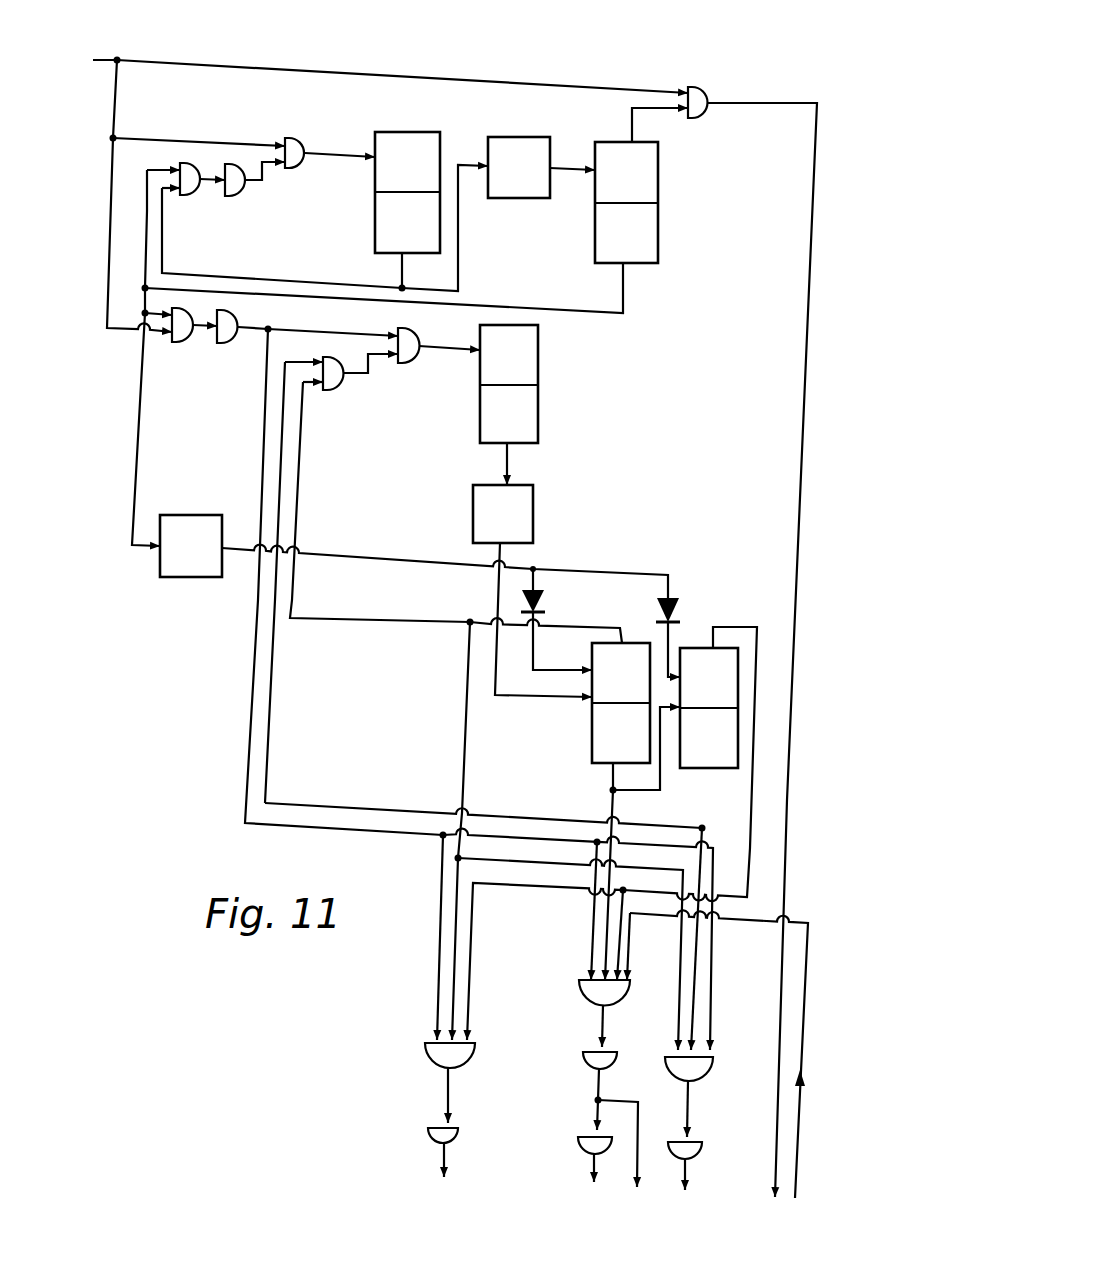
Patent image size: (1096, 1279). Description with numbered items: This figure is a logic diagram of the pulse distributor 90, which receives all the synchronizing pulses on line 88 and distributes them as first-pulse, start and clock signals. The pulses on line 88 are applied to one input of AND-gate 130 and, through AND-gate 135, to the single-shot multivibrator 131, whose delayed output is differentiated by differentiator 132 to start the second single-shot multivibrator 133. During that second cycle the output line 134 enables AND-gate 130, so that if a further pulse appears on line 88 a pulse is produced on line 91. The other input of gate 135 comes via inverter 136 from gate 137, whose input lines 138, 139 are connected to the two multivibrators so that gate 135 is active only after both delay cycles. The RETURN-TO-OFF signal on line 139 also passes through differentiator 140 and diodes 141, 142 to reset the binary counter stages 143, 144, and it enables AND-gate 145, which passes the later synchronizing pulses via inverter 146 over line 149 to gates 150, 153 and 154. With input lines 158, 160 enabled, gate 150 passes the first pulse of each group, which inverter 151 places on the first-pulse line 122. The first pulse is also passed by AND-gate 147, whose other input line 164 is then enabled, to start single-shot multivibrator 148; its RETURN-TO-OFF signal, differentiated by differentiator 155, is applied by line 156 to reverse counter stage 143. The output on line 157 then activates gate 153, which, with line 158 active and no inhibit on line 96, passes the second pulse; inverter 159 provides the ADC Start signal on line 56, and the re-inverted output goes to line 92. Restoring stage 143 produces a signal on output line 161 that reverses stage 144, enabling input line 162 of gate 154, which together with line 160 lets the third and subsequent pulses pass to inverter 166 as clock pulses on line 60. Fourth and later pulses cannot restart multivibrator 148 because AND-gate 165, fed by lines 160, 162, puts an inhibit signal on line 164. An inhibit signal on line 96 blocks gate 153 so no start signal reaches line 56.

The synchronizing pulse line 88 is at (104, 59).
The pulse distributor 90 is at (75, 108).
The AND-gate 130 is at (706, 92).
The single-shot multivibrator 131 is at (408, 131).
The differentiator 132 is at (522, 203).
The second single-shot multivibrator 133 is at (660, 176).
The output line 134 is at (634, 128).
The AND-gate 135 is at (300, 137).
The inverter 136 is at (237, 192).
The gate 137 is at (188, 196).
The input line 138 is at (280, 277).
The input line 139 is at (147, 211).
The differentiator 140 is at (185, 514).
The diode 141 is at (547, 600).
The diode 142 is at (681, 601).
The binary counter stage 143 is at (600, 733).
The binary counter stage 144 is at (723, 741).
The AND-gate 145 is at (177, 343).
The inverter 146 is at (227, 344).
The AND-gate 147 is at (408, 341).
The single-shot multivibrator 148 is at (540, 351).
The line 149 is at (248, 701).
The gate 150 is at (438, 1050).
The inverter 151 is at (452, 1138).
The gate 153 is at (589, 993).
The gate 154 is at (700, 1069).
The differentiator 155 is at (535, 518).
The line 156 is at (523, 698).
The output line 157 is at (611, 824).
The input line 158 is at (750, 849).
The inverter 159 is at (589, 1063).
The input line 160 is at (301, 426).
The output line 161 is at (626, 794).
The input line 162 is at (281, 479).
The input line 164 is at (377, 355).
The AND-gate 165 is at (330, 388).
The inverter 166 is at (700, 1147).
The first-pulse line 122 is at (443, 1152).
The line 92 is at (595, 1161).
The line 56 is at (631, 1160).
The line 60 is at (688, 1169).
The line 91 is at (770, 1130).
The inhibit line 96 is at (800, 1146).